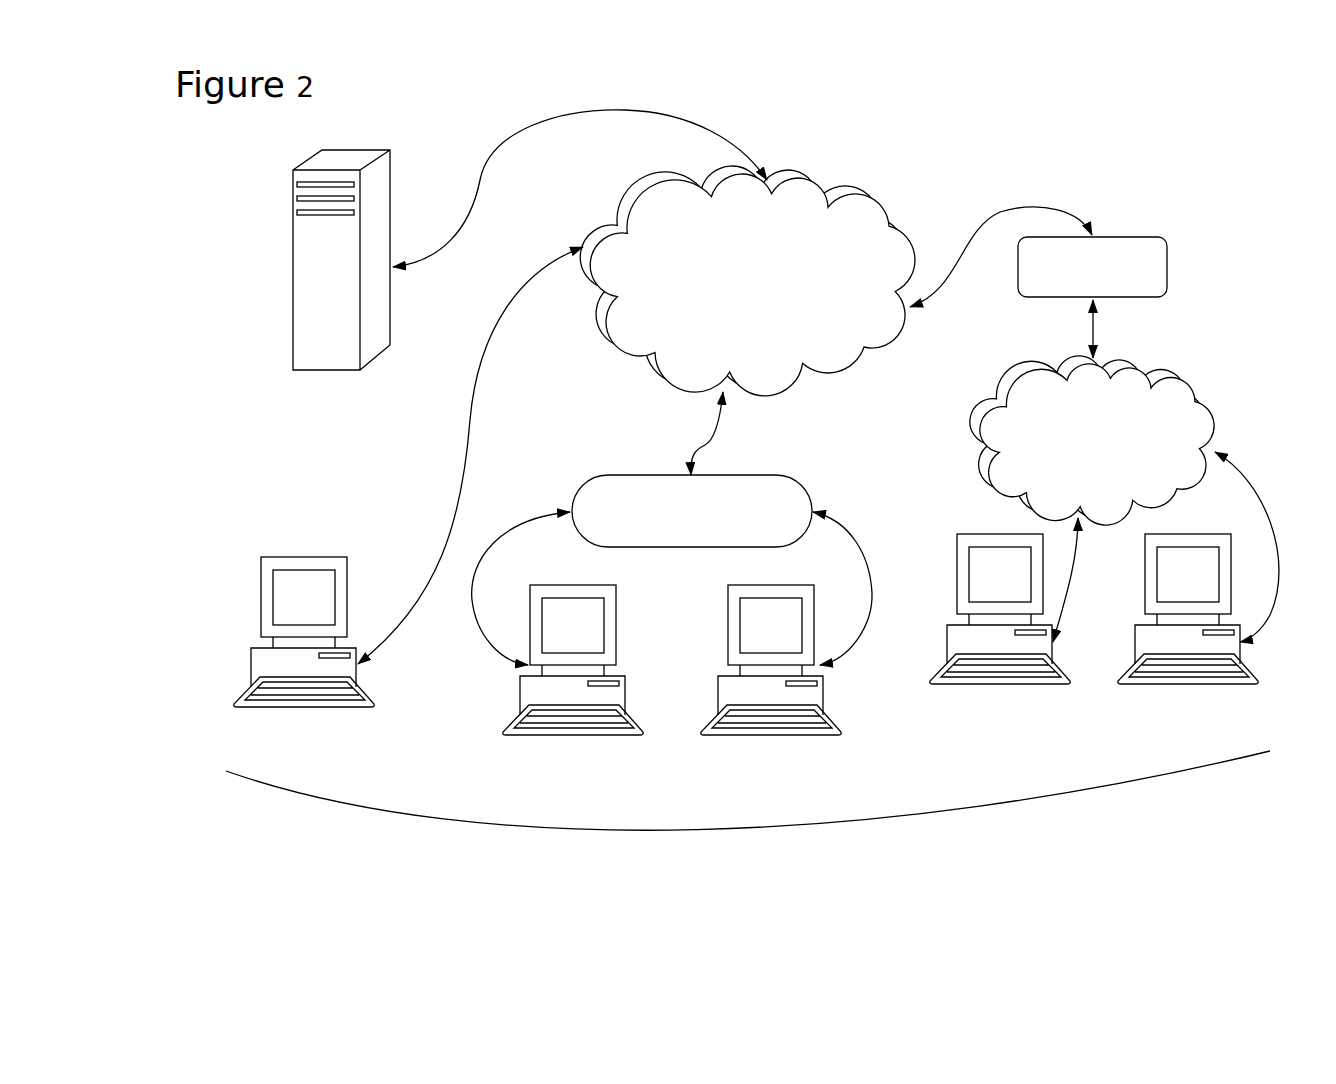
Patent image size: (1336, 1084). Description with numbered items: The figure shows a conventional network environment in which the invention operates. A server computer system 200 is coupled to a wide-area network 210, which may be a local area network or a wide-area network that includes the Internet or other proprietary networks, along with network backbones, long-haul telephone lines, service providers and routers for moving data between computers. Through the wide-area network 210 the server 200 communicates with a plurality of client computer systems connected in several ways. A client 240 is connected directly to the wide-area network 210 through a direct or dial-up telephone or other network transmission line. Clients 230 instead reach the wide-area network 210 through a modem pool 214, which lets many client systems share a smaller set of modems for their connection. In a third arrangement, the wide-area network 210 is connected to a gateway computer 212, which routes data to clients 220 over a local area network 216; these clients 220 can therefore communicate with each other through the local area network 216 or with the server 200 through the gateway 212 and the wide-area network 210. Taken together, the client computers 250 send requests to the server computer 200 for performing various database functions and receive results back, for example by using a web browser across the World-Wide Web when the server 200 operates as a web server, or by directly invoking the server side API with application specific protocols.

The server computer system 200 is at (292, 182).
The wide-area network 210 is at (815, 182).
The gateway computer 212 is at (1133, 232).
The modem pool 214 is at (660, 472).
The local area network 216 is at (1155, 363).
The client computer systems 220 is at (985, 533).
The client computer systems 230 is at (518, 687).
The client computer system 240 is at (300, 547).
The client computers 250 is at (748, 818).